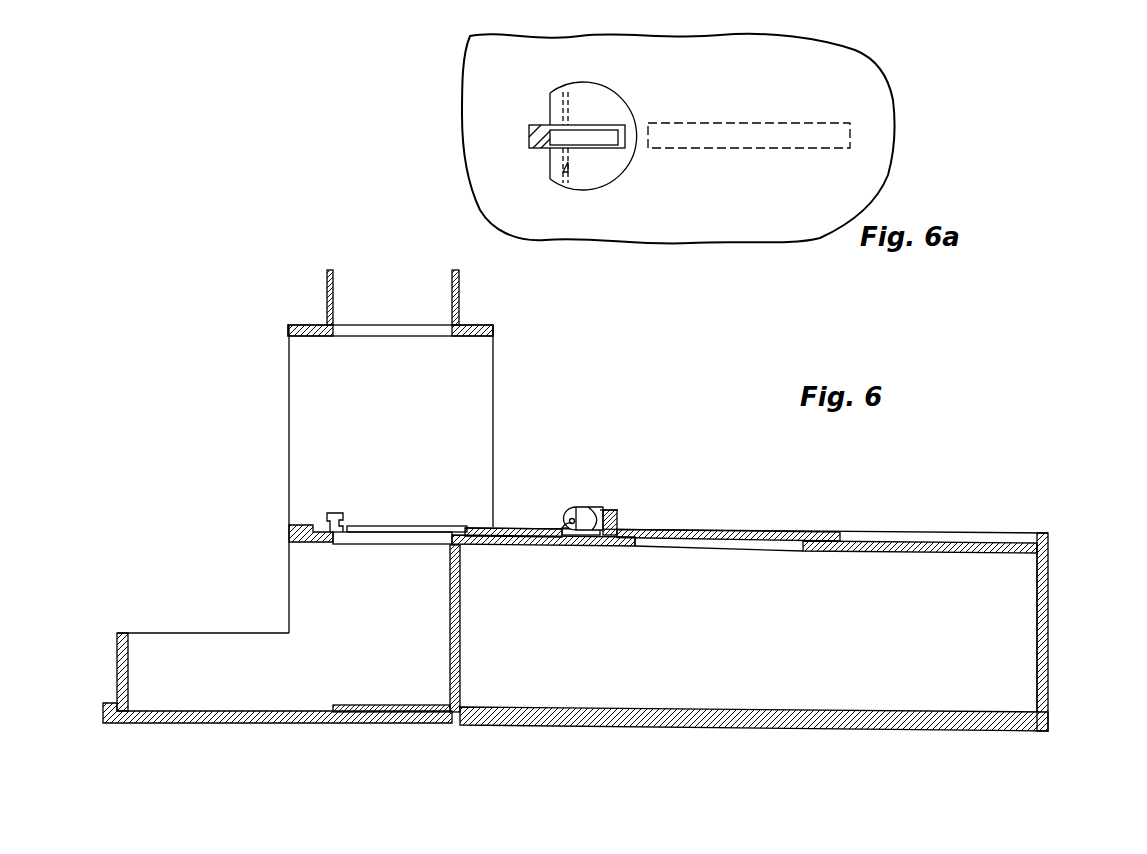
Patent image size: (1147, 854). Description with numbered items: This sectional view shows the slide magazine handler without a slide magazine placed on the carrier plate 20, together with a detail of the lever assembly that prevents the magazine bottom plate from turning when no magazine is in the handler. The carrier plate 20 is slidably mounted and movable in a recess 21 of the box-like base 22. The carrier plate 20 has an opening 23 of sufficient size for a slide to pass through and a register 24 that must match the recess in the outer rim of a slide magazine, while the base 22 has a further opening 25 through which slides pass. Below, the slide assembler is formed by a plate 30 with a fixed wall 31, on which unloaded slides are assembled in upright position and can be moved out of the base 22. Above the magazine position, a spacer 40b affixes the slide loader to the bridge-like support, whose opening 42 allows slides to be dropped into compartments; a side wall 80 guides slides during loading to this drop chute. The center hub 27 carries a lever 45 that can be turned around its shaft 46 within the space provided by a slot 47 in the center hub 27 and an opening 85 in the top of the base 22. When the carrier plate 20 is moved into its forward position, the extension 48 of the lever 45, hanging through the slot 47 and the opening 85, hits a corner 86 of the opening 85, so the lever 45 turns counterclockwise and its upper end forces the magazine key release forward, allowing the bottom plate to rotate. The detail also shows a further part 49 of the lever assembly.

In FIG. 6, the carrier plate 20 is at (795, 531).
In FIG. 6, the recess 21 is at (900, 533).
In FIG. 6, the base 22 is at (1047, 580).
In FIG. 6, the opening 23 is at (392, 527).
In FIG. 6, the register 24 is at (333, 513).
In FIG. 6, the opening 25 is at (383, 544).
In FIG. 6, the center hub 27 is at (618, 512).
In FIG. 6A, the center hub 27 is at (613, 172).
In FIG. 6, the plate 30 is at (357, 705).
In FIG. 6, the fixed wall 31 is at (462, 656).
In FIG. 6, the spacer 40b is at (402, 444).
In FIG. 6, the opening 42 is at (370, 331).
In FIG. 6, the lever 45 is at (585, 508).
In FIG. 6A, the lever 45 is at (541, 136).
In FIG. 6, the shaft 46 is at (571, 518).
In FIG. 6A, the shaft 46 is at (563, 167).
In FIG. 6A, the slot 47 is at (626, 132).
In FIG. 6, the extension 48 is at (584, 546).
In FIG. 6, the spring 49 is at (562, 517).
In FIG. 6, the side wall 80 is at (460, 291).
In FIG. 6, the opening 85 is at (717, 544).
In FIG. 6A, the opening 85 is at (737, 133).
In FIG. 6, the corner 86 is at (637, 548).